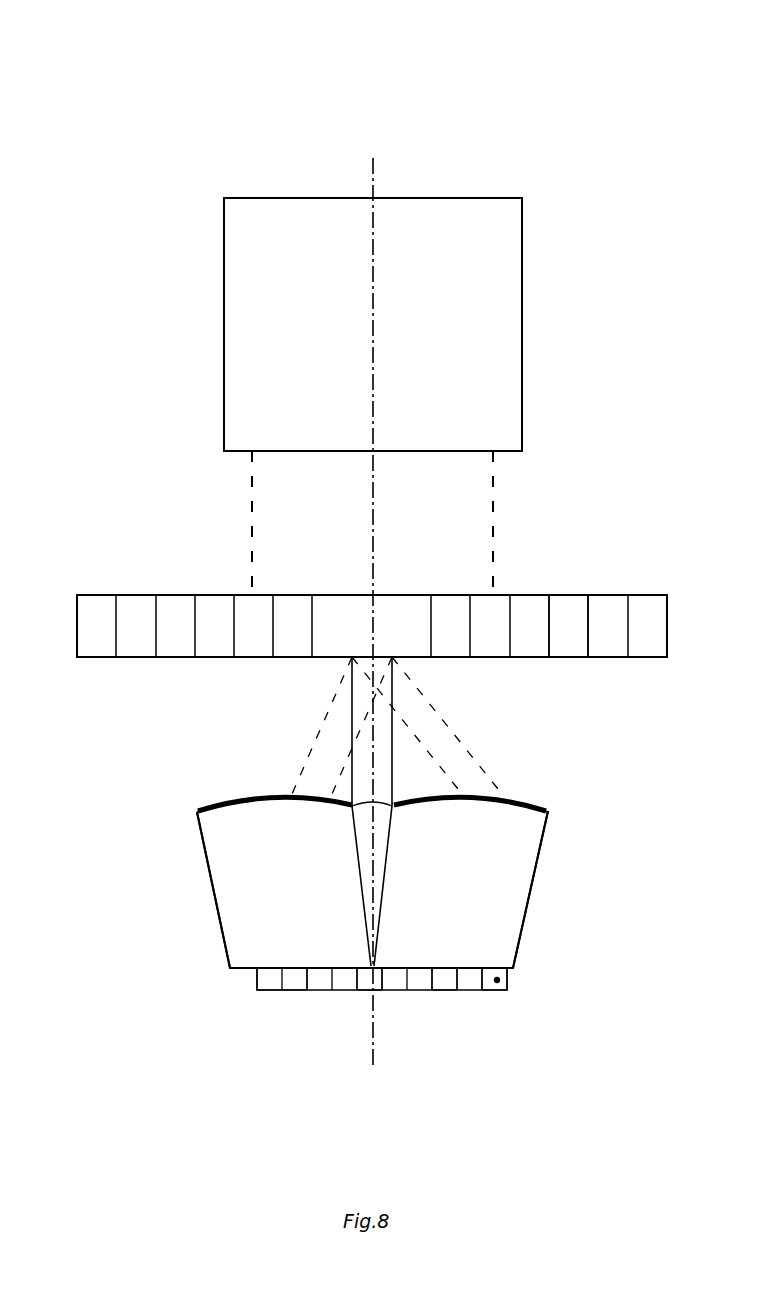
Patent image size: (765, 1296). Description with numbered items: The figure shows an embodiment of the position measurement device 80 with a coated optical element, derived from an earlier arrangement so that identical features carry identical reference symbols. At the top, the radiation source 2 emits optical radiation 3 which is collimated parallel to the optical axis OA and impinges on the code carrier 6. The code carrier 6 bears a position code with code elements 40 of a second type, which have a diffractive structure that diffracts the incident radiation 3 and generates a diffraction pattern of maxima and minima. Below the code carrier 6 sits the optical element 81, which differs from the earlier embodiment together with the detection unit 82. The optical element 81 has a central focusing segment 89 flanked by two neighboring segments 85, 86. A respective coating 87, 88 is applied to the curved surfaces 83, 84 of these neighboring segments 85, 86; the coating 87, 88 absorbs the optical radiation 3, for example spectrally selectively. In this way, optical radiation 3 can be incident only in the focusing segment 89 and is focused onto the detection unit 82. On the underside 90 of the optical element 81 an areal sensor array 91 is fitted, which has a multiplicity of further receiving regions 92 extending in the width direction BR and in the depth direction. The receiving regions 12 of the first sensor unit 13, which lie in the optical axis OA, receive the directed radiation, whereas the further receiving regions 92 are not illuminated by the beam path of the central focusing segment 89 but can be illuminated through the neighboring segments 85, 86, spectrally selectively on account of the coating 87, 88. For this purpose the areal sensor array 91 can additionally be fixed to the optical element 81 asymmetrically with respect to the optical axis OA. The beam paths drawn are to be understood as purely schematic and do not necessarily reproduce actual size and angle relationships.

The position measurement device 80 is at (604, 170).
The radiation source 2 is at (427, 198).
The optical axis OA is at (372, 175).
The optical radiation 3 is at (493, 544).
The code carrier 6 is at (668, 619).
The code elements of a second type 40 is at (570, 605).
The optical element 81 is at (387, 844).
The curved surface 83 is at (226, 800).
The curved surface 84 is at (505, 798).
The neighboring segment 85 is at (222, 897).
The neighboring segment 86 is at (500, 936).
The coating 87 is at (252, 800).
The coating 88 is at (422, 800).
The focusing segment 89 is at (352, 806).
The detection unit 82 is at (395, 990).
The receiving regions 12 is at (363, 982).
The first sensor unit 13 is at (450, 990).
The underside 90 is at (246, 972).
The areal sensor array 91 is at (499, 981).
The further receiving regions 92 is at (295, 984).
The width direction BR is at (442, 1092).